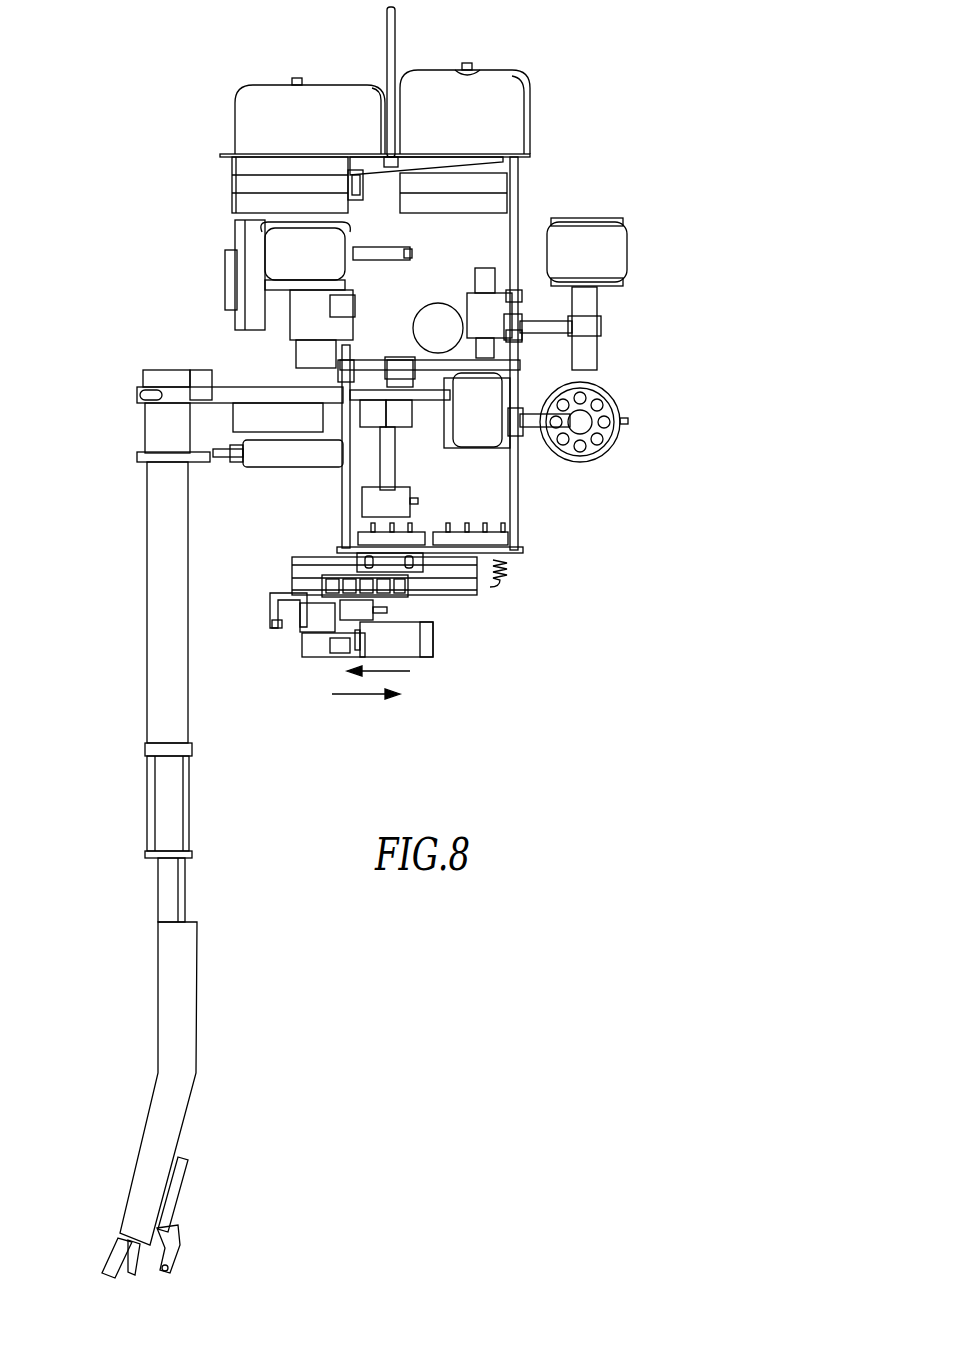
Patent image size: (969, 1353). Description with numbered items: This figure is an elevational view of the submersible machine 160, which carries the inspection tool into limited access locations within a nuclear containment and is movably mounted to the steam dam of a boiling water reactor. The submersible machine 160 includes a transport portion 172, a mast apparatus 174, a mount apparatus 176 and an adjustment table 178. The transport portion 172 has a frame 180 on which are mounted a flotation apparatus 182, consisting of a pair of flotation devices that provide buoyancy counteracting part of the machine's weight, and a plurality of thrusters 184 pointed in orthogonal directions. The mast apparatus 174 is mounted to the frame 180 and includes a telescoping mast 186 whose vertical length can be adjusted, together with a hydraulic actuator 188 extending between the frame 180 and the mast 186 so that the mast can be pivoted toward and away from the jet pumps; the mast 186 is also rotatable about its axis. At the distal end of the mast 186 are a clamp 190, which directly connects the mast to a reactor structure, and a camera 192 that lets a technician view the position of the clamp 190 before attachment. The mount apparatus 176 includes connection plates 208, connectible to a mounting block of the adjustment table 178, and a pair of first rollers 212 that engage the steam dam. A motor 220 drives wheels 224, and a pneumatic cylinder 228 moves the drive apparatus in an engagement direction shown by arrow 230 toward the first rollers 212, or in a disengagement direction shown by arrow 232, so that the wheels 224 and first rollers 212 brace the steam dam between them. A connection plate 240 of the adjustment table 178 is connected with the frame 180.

The submersible machine 160 is at (548, 95).
The transport portion 172 is at (530, 212).
The mast apparatus 174 is at (135, 503).
The mount apparatus 176 is at (455, 647).
The adjustment table 178 is at (492, 603).
The frame 180 is at (520, 483).
The flotation apparatus 182 is at (432, 70).
The thrusters 184 is at (332, 240).
The telescoping mast 186 is at (147, 550).
The hydraulic actuator 188 is at (292, 463).
The clamp 190 is at (173, 1250).
The camera 192 is at (107, 1267).
The connection plates 208 is at (333, 575).
The first rollers 212 is at (268, 625).
The motor 220 is at (415, 657).
The wheels 224 is at (300, 617).
The pneumatic cylinder 228 is at (370, 618).
The arrow 230 is at (408, 672).
The arrow 232 is at (353, 697).
The connection plate 240 is at (385, 548).